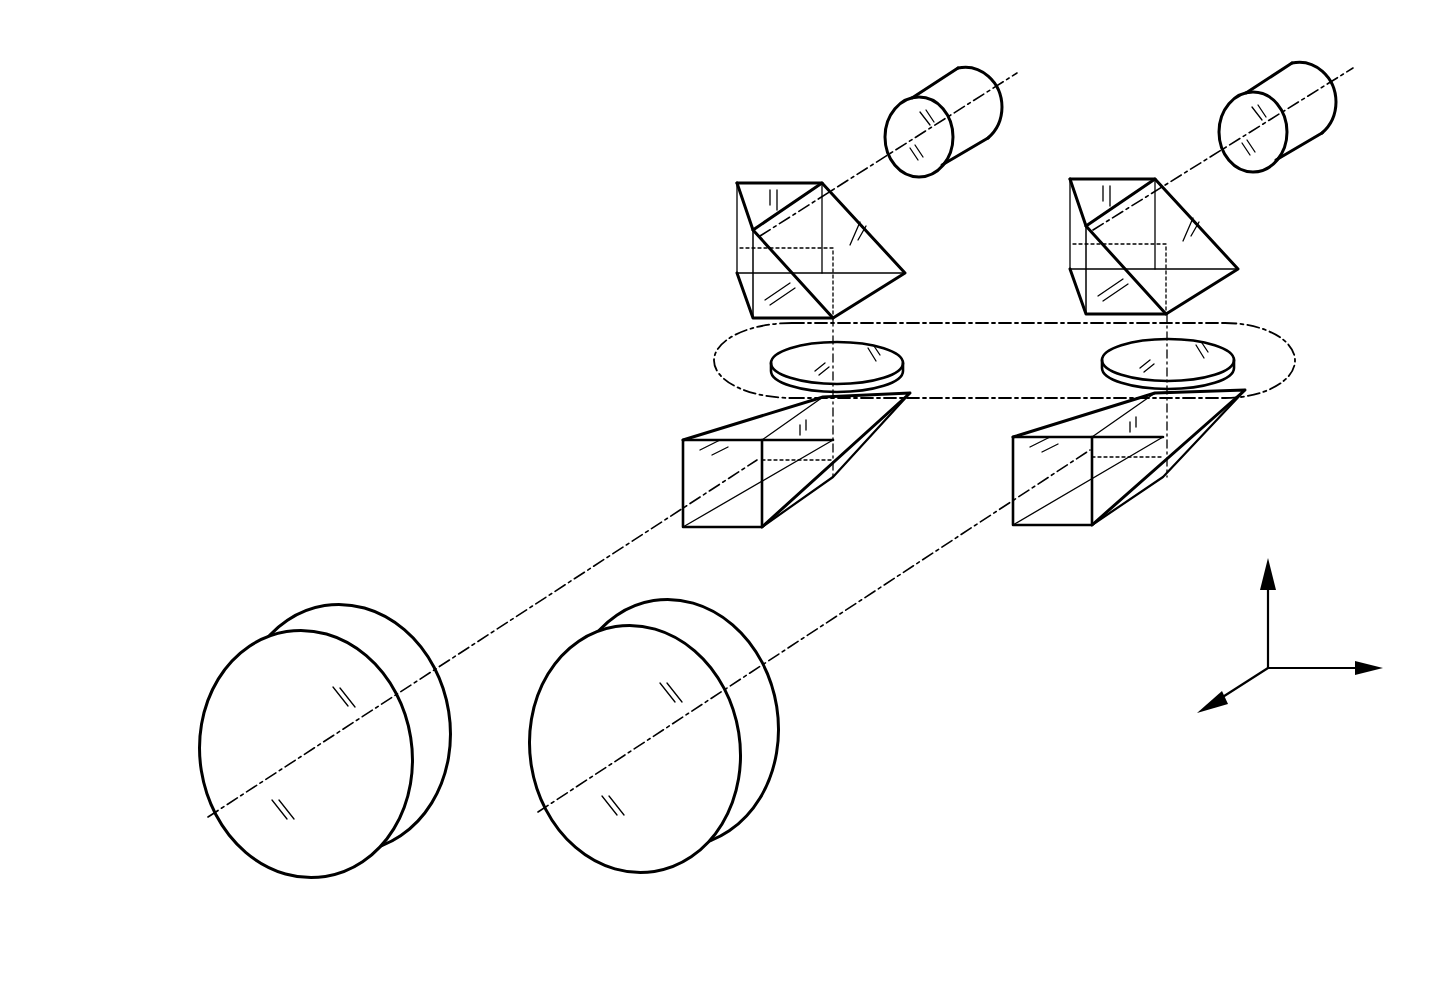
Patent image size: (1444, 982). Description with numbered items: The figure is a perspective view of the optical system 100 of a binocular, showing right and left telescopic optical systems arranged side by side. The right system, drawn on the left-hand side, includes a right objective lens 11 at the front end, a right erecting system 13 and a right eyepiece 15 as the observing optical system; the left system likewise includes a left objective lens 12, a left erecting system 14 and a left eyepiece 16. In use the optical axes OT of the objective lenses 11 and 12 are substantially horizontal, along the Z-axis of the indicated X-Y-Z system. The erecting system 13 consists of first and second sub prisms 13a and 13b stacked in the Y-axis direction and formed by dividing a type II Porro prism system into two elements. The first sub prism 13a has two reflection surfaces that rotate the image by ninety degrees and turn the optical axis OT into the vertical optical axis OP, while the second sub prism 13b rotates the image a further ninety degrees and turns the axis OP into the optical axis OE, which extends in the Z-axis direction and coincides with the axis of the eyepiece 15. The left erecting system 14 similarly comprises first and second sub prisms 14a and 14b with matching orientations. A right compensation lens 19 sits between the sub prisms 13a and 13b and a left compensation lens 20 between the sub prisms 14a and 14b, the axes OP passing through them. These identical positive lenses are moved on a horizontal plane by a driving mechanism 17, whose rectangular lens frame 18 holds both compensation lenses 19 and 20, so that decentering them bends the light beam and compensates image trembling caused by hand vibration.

The optical system 100 is at (448, 271).
The right objective lens 11 is at (263, 822).
The left objective lens 12 is at (600, 818).
The right erecting system 13 is at (636, 243).
The first sub prism 13a is at (697, 432).
The second sub prism 13b is at (740, 284).
The left erecting system 14 is at (1362, 305).
The first sub prism 14a is at (1235, 420).
The second sub prism 14b is at (1242, 300).
The right eyepiece 15 is at (940, 88).
The left eyepiece 16 is at (1276, 83).
The driving mechanism 17 is at (966, 410).
The rectangular lens frame 18 is at (978, 322).
The right compensation lens 19 is at (872, 345).
The left compensation lens 20 is at (1122, 352).
The optical axis of the objective lens OT is at (543, 585).
The optical axis of the eyepiece OE is at (873, 160).
The optical axis extending in the Y-axis direction OP is at (773, 398).